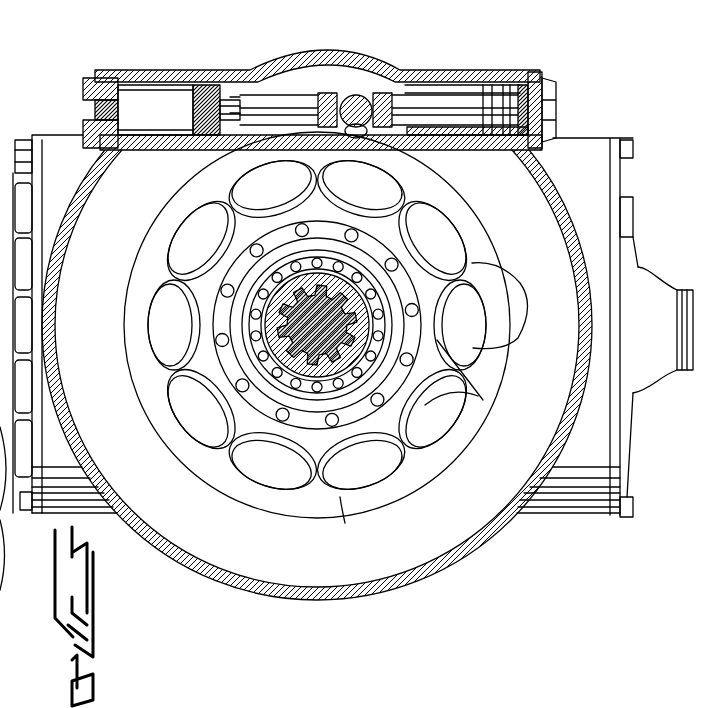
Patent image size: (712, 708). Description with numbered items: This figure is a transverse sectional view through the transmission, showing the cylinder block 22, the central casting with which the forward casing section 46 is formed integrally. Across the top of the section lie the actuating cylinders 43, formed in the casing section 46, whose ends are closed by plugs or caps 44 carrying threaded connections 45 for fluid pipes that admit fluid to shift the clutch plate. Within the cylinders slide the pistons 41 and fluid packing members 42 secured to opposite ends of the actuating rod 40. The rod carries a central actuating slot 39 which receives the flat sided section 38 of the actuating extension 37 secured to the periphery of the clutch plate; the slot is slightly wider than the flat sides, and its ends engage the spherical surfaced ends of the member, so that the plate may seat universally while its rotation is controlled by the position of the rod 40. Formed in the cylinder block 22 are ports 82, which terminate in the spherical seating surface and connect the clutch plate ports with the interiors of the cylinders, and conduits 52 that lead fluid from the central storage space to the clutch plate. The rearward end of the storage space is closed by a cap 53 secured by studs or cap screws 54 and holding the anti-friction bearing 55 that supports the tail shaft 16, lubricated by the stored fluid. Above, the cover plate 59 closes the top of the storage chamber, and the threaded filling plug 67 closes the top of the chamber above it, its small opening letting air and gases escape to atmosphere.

The tail shaft 16 is at (417, 325).
The cylinder block 22 is at (340, 410).
The actuating extension 37 is at (366, 133).
The flat sided section 38 is at (351, 94).
The central actuating slot 39 is at (331, 92).
The actuating rod 40 is at (404, 107).
The pistons 41 is at (222, 83).
The fluid packing members 42 is at (184, 84).
The actuating cylinders 43 is at (443, 90).
The plugs or caps 44 is at (90, 79).
The threaded connections 45 is at (140, 100).
The forward casing section 46 is at (20, 152).
The conduits 52 is at (282, 443).
The cap 53 is at (348, 522).
The studs or cap screws 54 is at (510, 280).
The anti-friction bearing 55 is at (413, 478).
The cover plate 59 is at (653, 293).
The threaded filling plug 67 is at (687, 292).
The ports 82 is at (482, 400).